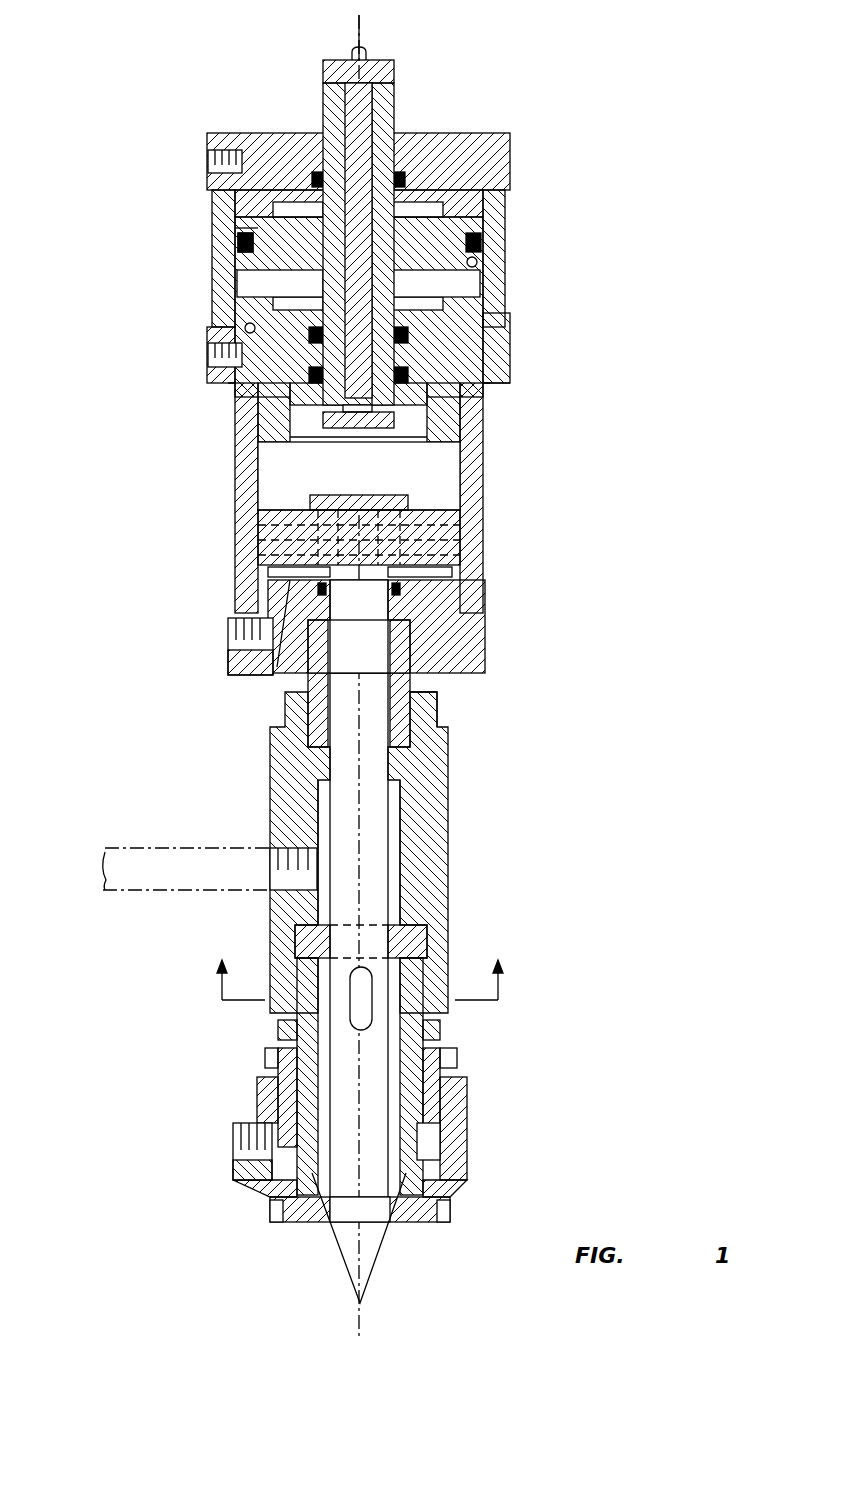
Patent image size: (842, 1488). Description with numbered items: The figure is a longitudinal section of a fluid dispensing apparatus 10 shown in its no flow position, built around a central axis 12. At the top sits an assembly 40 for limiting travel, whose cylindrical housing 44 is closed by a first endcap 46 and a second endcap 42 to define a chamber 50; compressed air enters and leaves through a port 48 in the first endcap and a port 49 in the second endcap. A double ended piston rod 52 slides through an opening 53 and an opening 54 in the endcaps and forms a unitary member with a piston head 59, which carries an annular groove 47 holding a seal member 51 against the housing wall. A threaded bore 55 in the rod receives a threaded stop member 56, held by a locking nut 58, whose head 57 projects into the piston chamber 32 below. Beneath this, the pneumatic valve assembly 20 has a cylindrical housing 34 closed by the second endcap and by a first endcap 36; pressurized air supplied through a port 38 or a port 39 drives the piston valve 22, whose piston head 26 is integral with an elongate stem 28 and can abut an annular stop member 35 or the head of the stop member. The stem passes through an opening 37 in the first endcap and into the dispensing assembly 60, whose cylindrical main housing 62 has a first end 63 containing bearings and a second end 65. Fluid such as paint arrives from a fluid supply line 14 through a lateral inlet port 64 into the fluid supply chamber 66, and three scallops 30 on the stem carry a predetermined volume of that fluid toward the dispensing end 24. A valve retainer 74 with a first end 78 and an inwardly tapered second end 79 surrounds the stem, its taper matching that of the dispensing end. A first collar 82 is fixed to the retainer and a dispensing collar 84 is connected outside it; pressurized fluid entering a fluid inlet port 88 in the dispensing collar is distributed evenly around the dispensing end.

The fluid dispensing apparatus 10 is at (400, 669).
The axis 12 is at (358, 30).
The fluid supply line 14 is at (160, 846).
The pneumatic valve assembly 20 is at (323, 565).
The piston valve 22 is at (410, 770).
The dispensing end 24 is at (370, 1257).
The piston head 26 is at (277, 543).
The elongate stem 28 is at (342, 692).
The material transfer recesses or scallops 30 is at (353, 1016).
The piston chamber 32 is at (413, 480).
The cylindrical housing 34 is at (473, 528).
The annular stop member 35 is at (457, 573).
The first endcap 36 is at (468, 657).
The opening 37 is at (290, 585).
The port 38 is at (236, 655).
The port 39 is at (218, 362).
The assembly for limiting travel 40 is at (401, 259).
The second endcap 42 is at (500, 355).
The cylindrical housing 44 is at (493, 218).
The first endcap 46 is at (483, 160).
The annular groove 47 is at (483, 276).
The port 48 is at (225, 168).
The port 49 is at (250, 330).
The chamber 50 is at (264, 297).
The seal member 51 is at (238, 243).
The double ended piston rod 52 is at (337, 110).
The opening 53 is at (395, 153).
The opening 54 is at (495, 385).
The threaded bore 55 is at (367, 288).
The threaded stop member 56 is at (385, 110).
The head 57 is at (340, 423).
The locking nut 58 is at (330, 72).
The piston head 59 is at (247, 227).
The dispensing assembly 60 is at (331, 693).
The cylindrical main housing 62 is at (285, 770).
The first end 63 is at (437, 705).
The inlet port 64 is at (283, 886).
The second end 65 is at (440, 943).
The fluid supply chamber 66 is at (400, 827).
The valve retainer 74 is at (430, 1030).
The first end 78 is at (320, 1096).
The second end 79 is at (435, 1200).
The first collar 82 is at (285, 1060).
The dispensing collar 84 is at (455, 1107).
The fluid inlet port 88 is at (240, 1168).